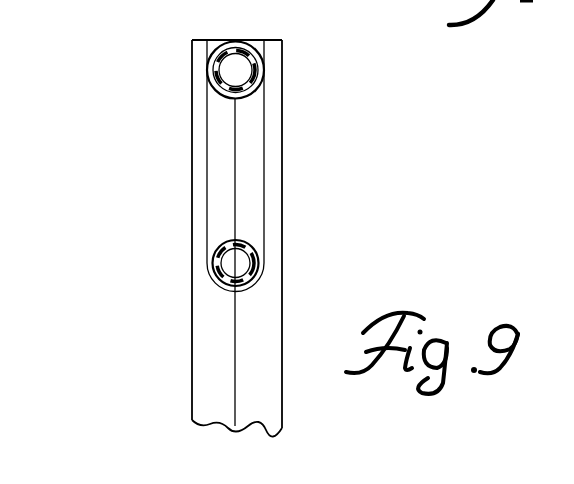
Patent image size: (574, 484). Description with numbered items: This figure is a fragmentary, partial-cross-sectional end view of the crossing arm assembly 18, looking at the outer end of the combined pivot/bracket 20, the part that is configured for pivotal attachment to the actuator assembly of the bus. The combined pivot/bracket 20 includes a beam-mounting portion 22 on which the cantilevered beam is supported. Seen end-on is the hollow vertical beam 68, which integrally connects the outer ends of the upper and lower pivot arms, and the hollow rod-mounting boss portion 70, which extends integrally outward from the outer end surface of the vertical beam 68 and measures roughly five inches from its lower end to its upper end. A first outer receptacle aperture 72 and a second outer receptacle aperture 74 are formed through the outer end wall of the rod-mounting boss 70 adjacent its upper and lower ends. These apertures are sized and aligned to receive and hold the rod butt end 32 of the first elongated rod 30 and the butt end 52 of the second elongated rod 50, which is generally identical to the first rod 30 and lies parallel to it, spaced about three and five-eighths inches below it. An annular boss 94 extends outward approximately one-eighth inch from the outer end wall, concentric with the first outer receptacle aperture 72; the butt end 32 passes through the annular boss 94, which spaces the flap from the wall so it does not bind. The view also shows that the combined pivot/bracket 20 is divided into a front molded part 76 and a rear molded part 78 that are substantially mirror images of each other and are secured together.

The crossing arm assembly 18 is at (256, 238).
The combined pivot/bracket 20 is at (256, 238).
The beam-mounting portion 22 is at (235, 233).
The first elongated rod 30 is at (240, 51).
The rod butt end 32 is at (288, 54).
The second elongated rod 50 is at (238, 266).
The butt end 52 is at (289, 263).
The hollow vertical beam 68 is at (233, 238).
The rod-mounting boss portion 70 is at (304, 251).
The first outer receptacle aperture 72 is at (254, 45).
The second outer receptacle aperture 74 is at (192, 250).
The front molded part 76 is at (150, 230).
The rear molded part 78 is at (315, 234).
The annular boss 94 is at (303, 67).